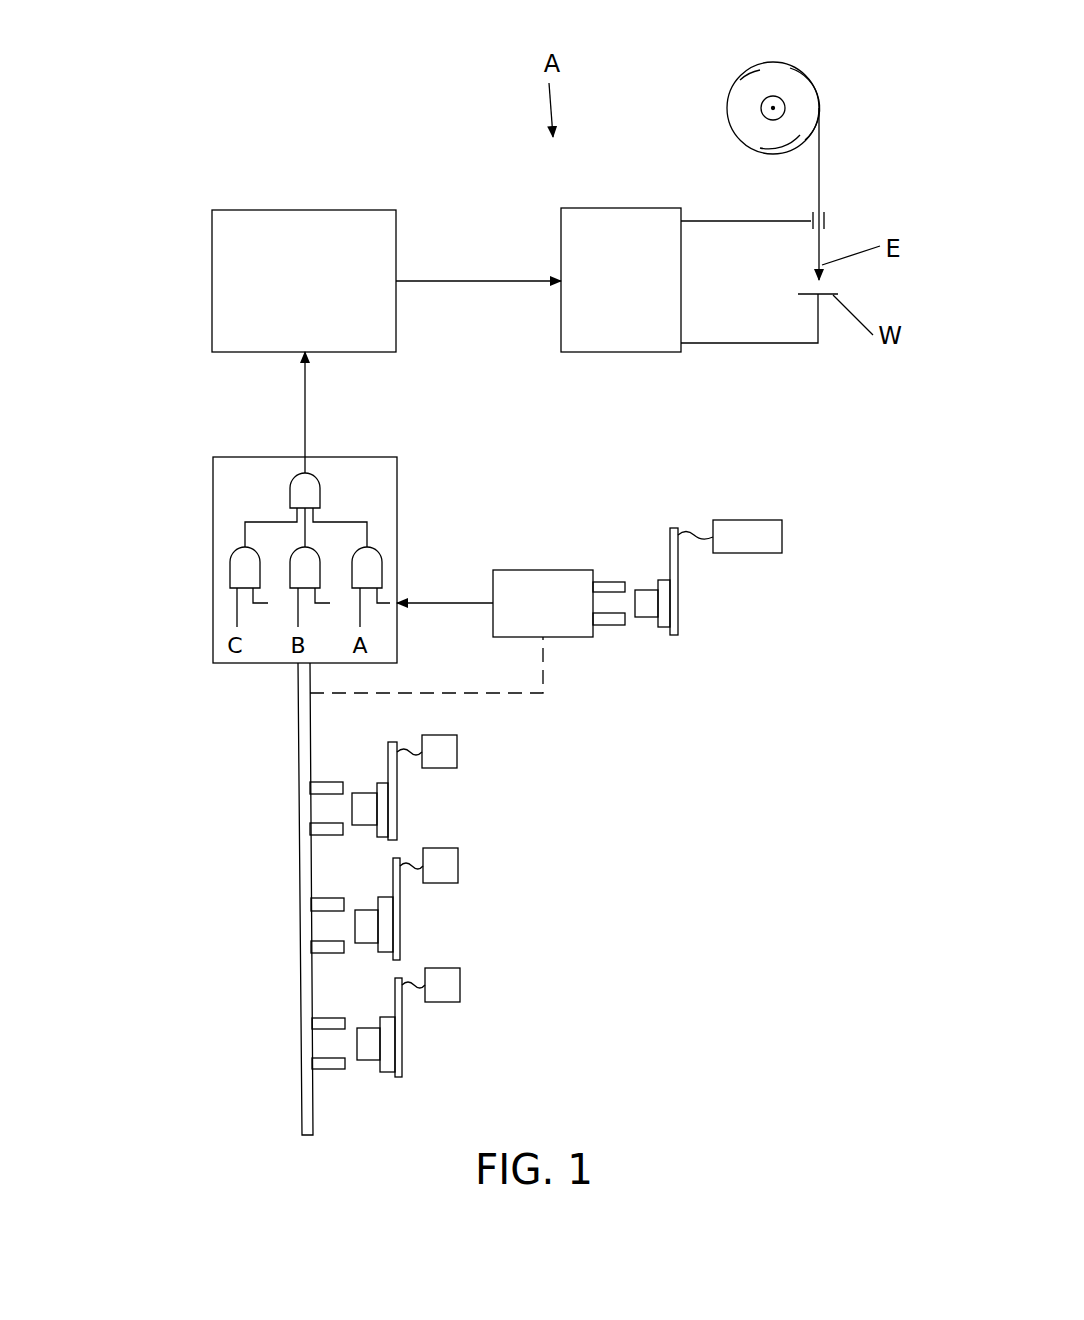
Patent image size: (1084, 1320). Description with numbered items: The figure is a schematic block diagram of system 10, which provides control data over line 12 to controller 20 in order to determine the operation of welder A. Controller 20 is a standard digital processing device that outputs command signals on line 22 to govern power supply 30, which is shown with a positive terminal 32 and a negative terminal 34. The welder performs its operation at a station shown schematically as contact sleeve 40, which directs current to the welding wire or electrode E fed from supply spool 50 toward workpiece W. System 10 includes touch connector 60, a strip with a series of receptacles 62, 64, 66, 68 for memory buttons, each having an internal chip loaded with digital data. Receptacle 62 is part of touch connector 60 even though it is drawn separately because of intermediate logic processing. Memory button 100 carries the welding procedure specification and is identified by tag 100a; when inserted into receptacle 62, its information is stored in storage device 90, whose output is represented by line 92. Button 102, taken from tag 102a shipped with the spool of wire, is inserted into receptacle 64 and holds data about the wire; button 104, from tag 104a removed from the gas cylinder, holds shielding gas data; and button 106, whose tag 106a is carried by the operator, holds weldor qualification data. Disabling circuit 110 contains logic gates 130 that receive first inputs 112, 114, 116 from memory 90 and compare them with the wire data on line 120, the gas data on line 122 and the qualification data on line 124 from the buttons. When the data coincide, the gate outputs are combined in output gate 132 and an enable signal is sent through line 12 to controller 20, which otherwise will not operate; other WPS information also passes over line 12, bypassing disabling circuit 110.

The system 10 is at (158, 512).
The line 12 is at (305, 402).
The controller 20 is at (322, 210).
The line 22 is at (466, 281).
The power supply 30 is at (602, 208).
The positive terminal 32 is at (681, 221).
The negative terminal 34 is at (681, 343).
The contact sleeve 40 is at (828, 217).
The supply spool 50 is at (748, 83).
The touch connector 60 is at (300, 758).
The receptacle 62 is at (608, 627).
The receptacle 64 is at (318, 828).
The receptacle 66 is at (332, 948).
The receptacle 68 is at (330, 1065).
The storage device 90 is at (542, 568).
The line 92 is at (455, 600).
The memory button 100 is at (665, 605).
The tag 100a is at (752, 518).
The memory button 102 is at (385, 790).
The tag 102a is at (457, 748).
The memory button 104 is at (387, 907).
The tag 104a is at (458, 862).
The memory button 106 is at (387, 1027).
The tag 106a is at (460, 985).
The disabling circuit 110 is at (368, 510).
The line 112 is at (380, 598).
The line 114 is at (318, 603).
The line 116 is at (255, 597).
The line 120 is at (360, 612).
The line 122 is at (295, 610).
The line 124 is at (233, 597).
The logic gates 130 is at (297, 558).
The output gate 132 is at (297, 483).